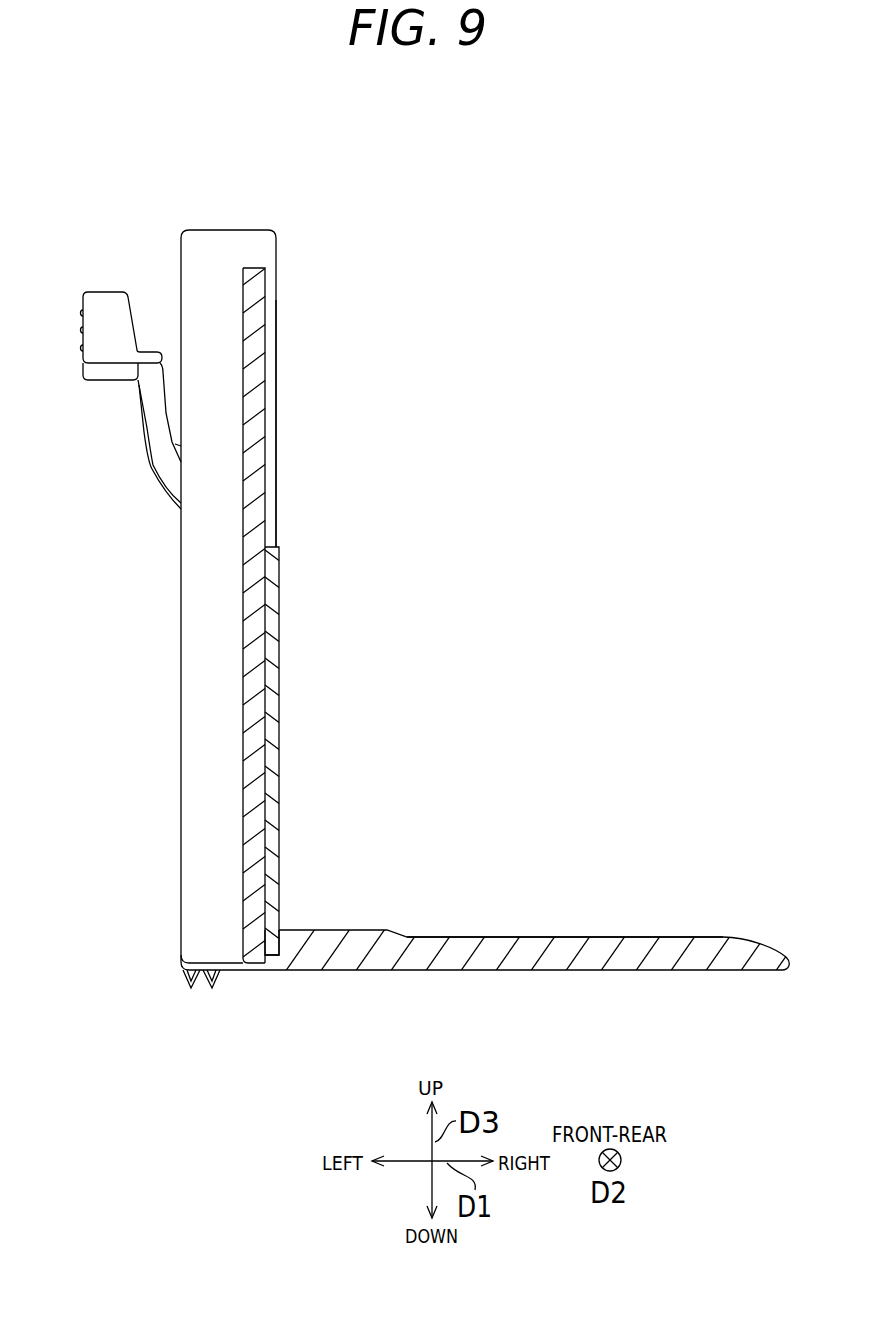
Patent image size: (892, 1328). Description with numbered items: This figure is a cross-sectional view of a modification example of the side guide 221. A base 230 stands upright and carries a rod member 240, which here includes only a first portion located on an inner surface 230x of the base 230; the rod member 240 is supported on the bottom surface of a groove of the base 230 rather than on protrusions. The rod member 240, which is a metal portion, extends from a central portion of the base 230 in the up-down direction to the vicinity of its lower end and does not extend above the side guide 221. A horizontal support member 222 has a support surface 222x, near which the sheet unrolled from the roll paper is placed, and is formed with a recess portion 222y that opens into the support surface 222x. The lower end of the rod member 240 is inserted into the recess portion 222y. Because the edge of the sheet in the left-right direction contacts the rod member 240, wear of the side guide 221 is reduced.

The base 230 is at (252, 277).
The inner surface of the base 230x is at (276, 377).
The side guide 221 is at (227, 505).
The rod member 240 is at (279, 683).
The support member 222 is at (502, 948).
The support surface 222x is at (630, 937).
The recess portion 222y is at (282, 950).